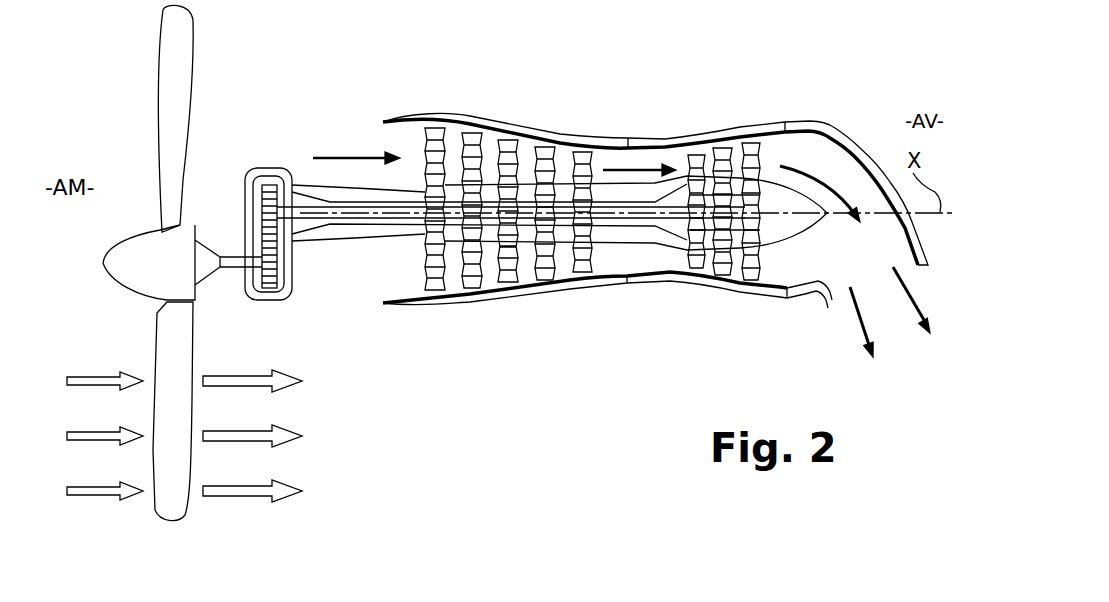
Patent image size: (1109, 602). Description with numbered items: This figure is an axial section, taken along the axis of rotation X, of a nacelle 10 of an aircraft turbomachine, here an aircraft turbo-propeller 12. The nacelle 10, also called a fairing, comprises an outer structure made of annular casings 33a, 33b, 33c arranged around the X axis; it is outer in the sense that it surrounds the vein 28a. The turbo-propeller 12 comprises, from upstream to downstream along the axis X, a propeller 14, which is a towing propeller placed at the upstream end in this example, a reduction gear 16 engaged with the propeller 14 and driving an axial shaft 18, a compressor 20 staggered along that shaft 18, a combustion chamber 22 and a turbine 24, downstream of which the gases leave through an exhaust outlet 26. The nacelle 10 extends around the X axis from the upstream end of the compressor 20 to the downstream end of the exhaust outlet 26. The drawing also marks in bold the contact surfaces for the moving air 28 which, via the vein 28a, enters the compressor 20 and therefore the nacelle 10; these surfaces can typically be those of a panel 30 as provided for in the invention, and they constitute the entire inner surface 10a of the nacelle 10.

The nacelle 10 is at (645, 108).
The inner surface of the nacelle 10a is at (537, 152).
The aircraft turbo-propeller 12 is at (100, 297).
The propeller 14 is at (153, 98).
The reduction gear 16 is at (268, 172).
The axial shaft 18 is at (360, 213).
The compressor 20 is at (510, 148).
The combustion chamber 22 is at (643, 253).
The turbine 24 is at (723, 153).
The exhaust outlet 26 is at (822, 268).
The moving air 28 is at (348, 156).
The vein 28a is at (402, 272).
The panel 30 is at (643, 278).
The annular casing 33a is at (473, 120).
The annular casing 33b is at (767, 128).
The annular casing 33c is at (840, 138).